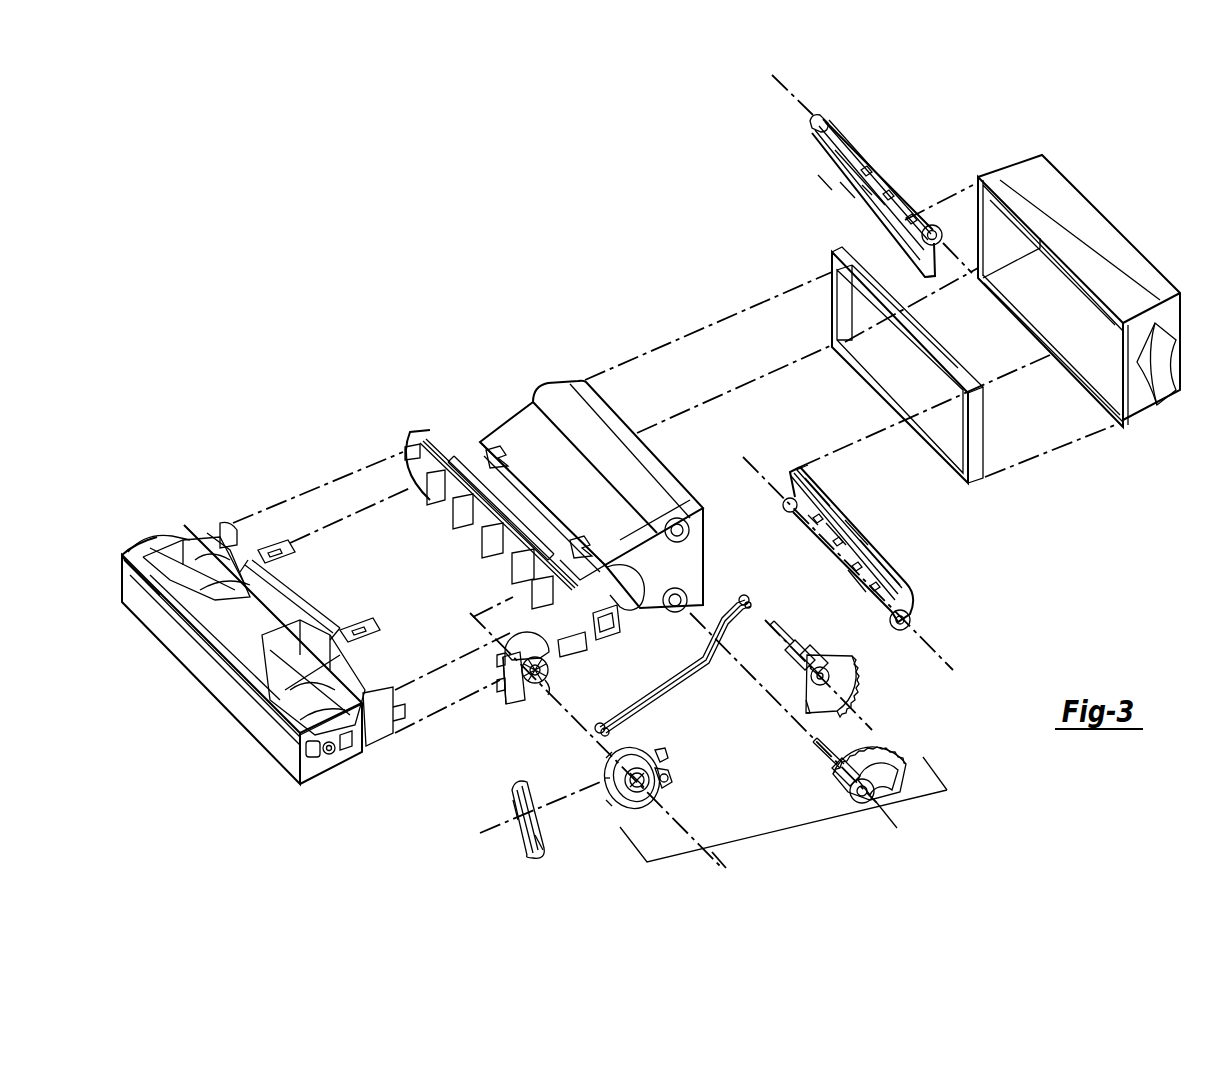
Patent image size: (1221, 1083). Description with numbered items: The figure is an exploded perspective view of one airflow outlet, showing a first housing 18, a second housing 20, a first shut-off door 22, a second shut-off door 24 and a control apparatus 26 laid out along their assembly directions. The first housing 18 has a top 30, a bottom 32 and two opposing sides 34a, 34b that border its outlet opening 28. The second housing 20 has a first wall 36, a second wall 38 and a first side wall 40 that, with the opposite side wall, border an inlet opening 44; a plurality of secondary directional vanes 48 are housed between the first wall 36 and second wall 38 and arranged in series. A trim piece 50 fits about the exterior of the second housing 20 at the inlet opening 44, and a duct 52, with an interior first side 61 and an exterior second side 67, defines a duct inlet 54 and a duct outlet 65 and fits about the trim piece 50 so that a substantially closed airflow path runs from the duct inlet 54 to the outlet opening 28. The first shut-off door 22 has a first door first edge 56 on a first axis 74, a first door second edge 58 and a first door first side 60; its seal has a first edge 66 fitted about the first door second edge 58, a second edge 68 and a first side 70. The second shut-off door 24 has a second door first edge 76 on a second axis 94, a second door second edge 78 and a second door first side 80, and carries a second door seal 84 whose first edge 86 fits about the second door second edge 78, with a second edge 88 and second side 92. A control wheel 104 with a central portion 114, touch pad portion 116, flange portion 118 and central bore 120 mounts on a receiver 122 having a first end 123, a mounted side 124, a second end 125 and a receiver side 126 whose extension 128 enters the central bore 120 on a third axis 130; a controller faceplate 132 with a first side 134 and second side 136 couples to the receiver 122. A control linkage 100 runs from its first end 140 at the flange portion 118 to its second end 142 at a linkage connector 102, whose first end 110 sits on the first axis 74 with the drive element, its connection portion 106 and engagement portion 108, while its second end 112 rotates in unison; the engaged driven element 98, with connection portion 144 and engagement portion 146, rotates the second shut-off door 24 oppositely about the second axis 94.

The first housing 18 is at (257, 652).
The second housing 20 is at (559, 508).
The first shut-off door 22 is at (865, 184).
The second shut-off door 24 is at (874, 542).
The control apparatus 26 is at (800, 835).
The outlet opening 28 is at (152, 536).
The top 30 is at (222, 636).
The bottom 32 is at (196, 674).
The opposing side 34a is at (160, 600).
The opposing side 34b is at (318, 768).
The first wall 36 is at (554, 491).
The second wall 38 is at (640, 614).
The first side wall 40 is at (657, 571).
The inlet opening 44 is at (688, 488).
The secondary directional vanes 48 is at (438, 503).
The trim piece 50 is at (832, 262).
The duct 52 is at (1095, 288).
The duct inlet 54 is at (1165, 271).
The first door first edge 56 is at (872, 168).
The first door second edge 58 is at (884, 204).
The first door first side 60 is at (843, 163).
The first side 61 is at (1051, 316).
The duct outlet 65 is at (1078, 380).
The first edge 66 is at (847, 190).
The second side 67 is at (1067, 236).
The second edge 68 is at (826, 183).
The first side 70 is at (927, 268).
The first axis 74 is at (770, 82).
The second door first edge 76 is at (855, 578).
The second door second edge 78 is at (835, 540).
The second door first side 80 is at (868, 190).
The second door seal 84 is at (880, 553).
The first edge 86 is at (830, 511).
The second edge 88 is at (867, 531).
The second side 92 is at (810, 474).
The second axis 94 is at (837, 652).
The driven element 98 is at (854, 758).
The control linkage 100 is at (685, 653).
The linkage connector 102 is at (800, 675).
The control wheel 104 is at (593, 783).
The connection portion 106 is at (793, 657).
The engagement portion 108 is at (816, 658).
The first end 110 is at (808, 648).
The second end 112 is at (770, 706).
The central portion 114 is at (666, 752).
The touch pad portion 116 is at (634, 794).
The flange portion 118 is at (672, 776).
The central bore 120 is at (637, 796).
The receiver 122 is at (519, 678).
The first end 123 is at (497, 673).
The mounted side 124 is at (515, 640).
The second end 125 is at (557, 645).
The receiver side 126 is at (547, 664).
The extension 128 is at (545, 688).
The third axis 130 is at (713, 859).
The controller faceplate 132 is at (520, 819).
The first side 134 is at (512, 848).
The second side 136 is at (544, 841).
The first end 140 is at (600, 717).
The second end 142 is at (740, 596).
The connection portion 144 is at (847, 790).
The engagement portion 146 is at (875, 770).